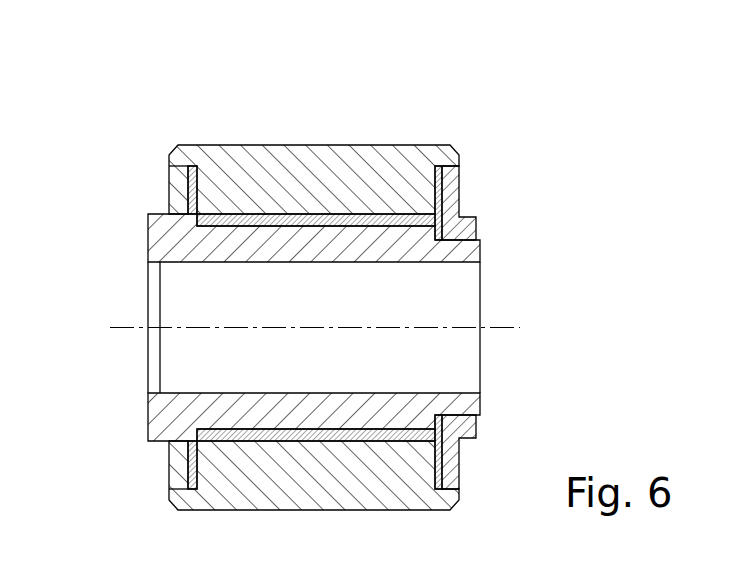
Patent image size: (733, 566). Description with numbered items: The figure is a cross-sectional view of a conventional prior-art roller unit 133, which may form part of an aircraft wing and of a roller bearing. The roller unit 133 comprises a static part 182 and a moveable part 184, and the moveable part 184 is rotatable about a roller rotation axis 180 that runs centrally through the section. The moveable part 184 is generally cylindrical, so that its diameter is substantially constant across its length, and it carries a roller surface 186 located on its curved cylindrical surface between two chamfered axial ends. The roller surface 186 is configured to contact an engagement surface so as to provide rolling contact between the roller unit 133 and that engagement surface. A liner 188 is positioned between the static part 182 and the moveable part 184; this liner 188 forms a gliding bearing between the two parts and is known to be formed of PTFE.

The roller unit 133 is at (158, 106).
The roller rotation axis 180 is at (130, 328).
The static part 182 is at (163, 233).
The moveable part 184 is at (395, 160).
The roller surface 186 is at (300, 145).
The liner 188 is at (235, 226).